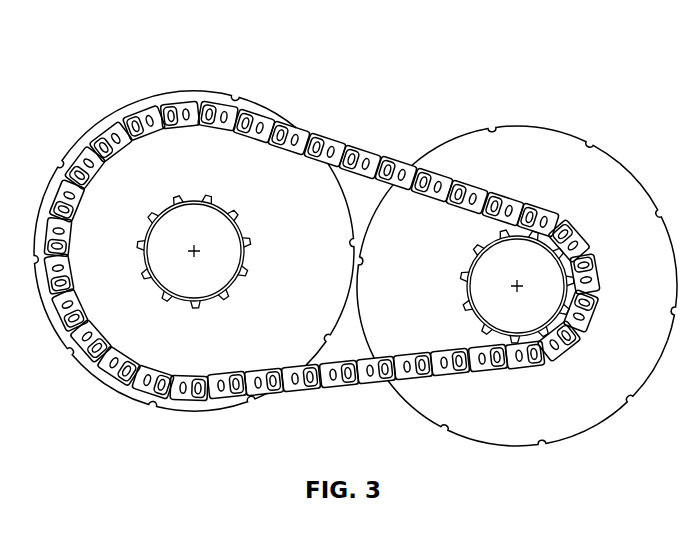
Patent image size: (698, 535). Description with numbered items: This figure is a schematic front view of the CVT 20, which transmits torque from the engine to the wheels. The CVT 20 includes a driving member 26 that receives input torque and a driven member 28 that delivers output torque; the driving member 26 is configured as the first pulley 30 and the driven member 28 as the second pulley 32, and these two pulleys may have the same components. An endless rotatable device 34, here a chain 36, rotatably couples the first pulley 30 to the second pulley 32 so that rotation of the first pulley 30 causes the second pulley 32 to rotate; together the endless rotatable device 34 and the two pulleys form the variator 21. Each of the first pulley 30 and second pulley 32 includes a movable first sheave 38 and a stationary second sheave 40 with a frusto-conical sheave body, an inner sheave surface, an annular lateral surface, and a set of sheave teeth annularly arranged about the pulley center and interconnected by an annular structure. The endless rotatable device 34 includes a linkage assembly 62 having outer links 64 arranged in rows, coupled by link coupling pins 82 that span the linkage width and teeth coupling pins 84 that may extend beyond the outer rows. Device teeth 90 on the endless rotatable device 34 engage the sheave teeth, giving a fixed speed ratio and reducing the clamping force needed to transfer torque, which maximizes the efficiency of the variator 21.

The CVT 20 is at (374, 94).
The variator 21 is at (393, 128).
The driving member 26 is at (162, 84).
The driven member 28 is at (619, 124).
The first pulley 30 is at (198, 88).
The second pulley 32 is at (550, 128).
The endless rotatable device 34 is at (366, 388).
The chain 36 is at (400, 386).
The first sheave 38 is at (82, 131).
The second sheave 40 is at (623, 163).
The linkage assembly 62 is at (274, 112).
The outer links 64 is at (245, 99).
The link coupling pin 82 is at (590, 242).
The teeth coupling pins 84 is at (600, 296).
The device teeth 90 is at (532, 360).